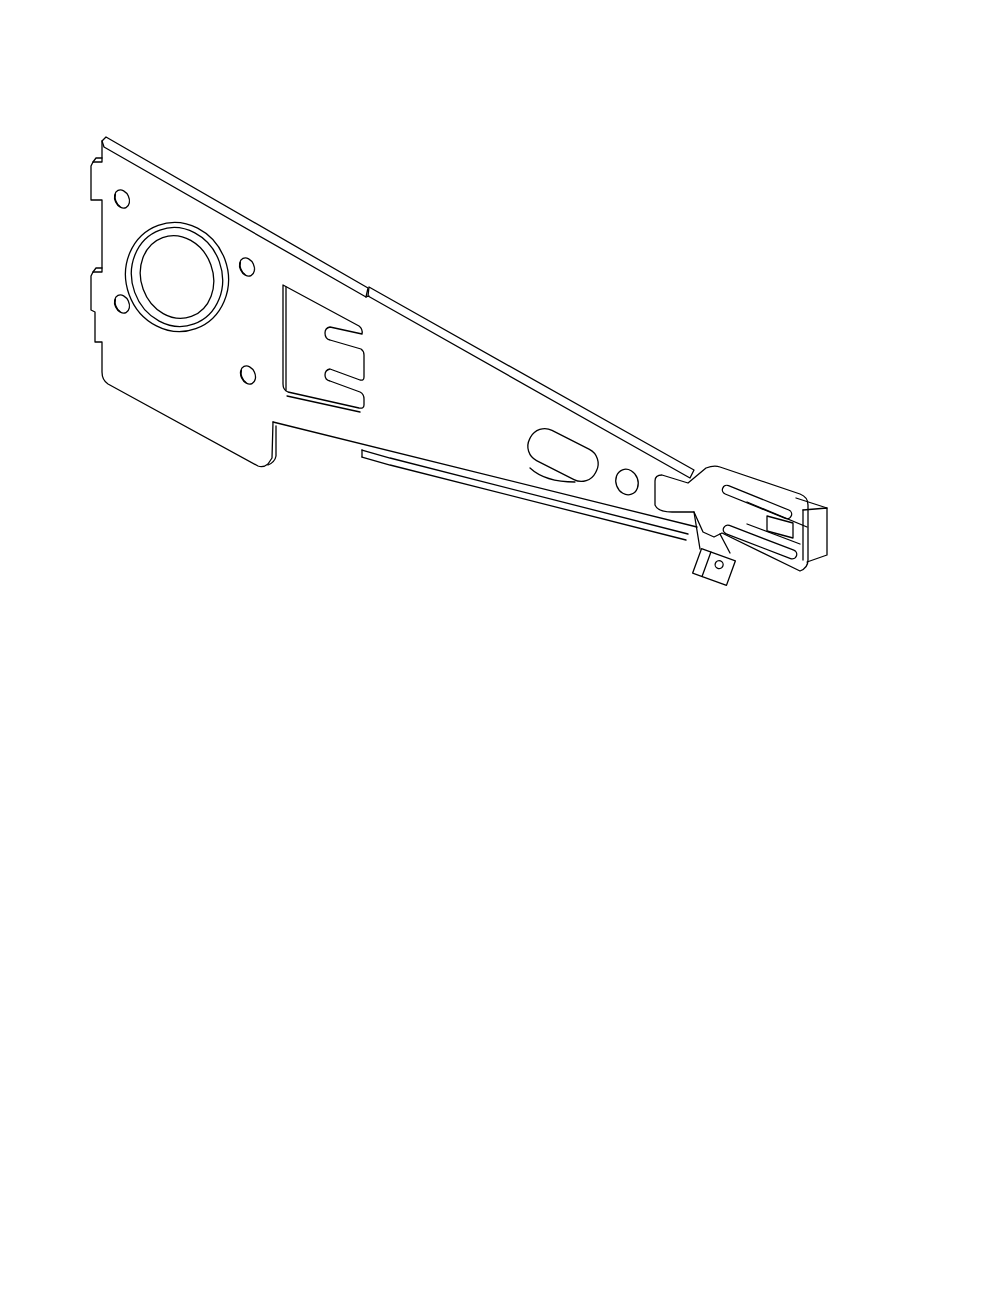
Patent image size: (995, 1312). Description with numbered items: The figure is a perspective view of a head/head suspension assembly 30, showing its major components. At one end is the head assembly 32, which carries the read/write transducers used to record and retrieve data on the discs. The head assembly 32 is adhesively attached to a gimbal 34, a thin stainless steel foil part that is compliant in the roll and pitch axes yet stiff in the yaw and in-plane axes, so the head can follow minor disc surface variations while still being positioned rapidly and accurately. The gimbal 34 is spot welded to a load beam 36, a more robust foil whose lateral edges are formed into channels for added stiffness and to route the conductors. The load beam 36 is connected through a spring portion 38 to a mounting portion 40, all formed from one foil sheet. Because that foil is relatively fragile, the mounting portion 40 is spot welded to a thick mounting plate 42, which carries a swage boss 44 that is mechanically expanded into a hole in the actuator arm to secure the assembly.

The head/head suspension assembly 30 is at (577, 180).
The head assembly 32 is at (830, 523).
The gimbal 34 is at (708, 517).
The load beam 36 is at (468, 395).
The spring portion 38 is at (362, 267).
The mounting portion 40 is at (205, 413).
The mounting plate 42 is at (112, 138).
The swage boss 44 is at (169, 222).